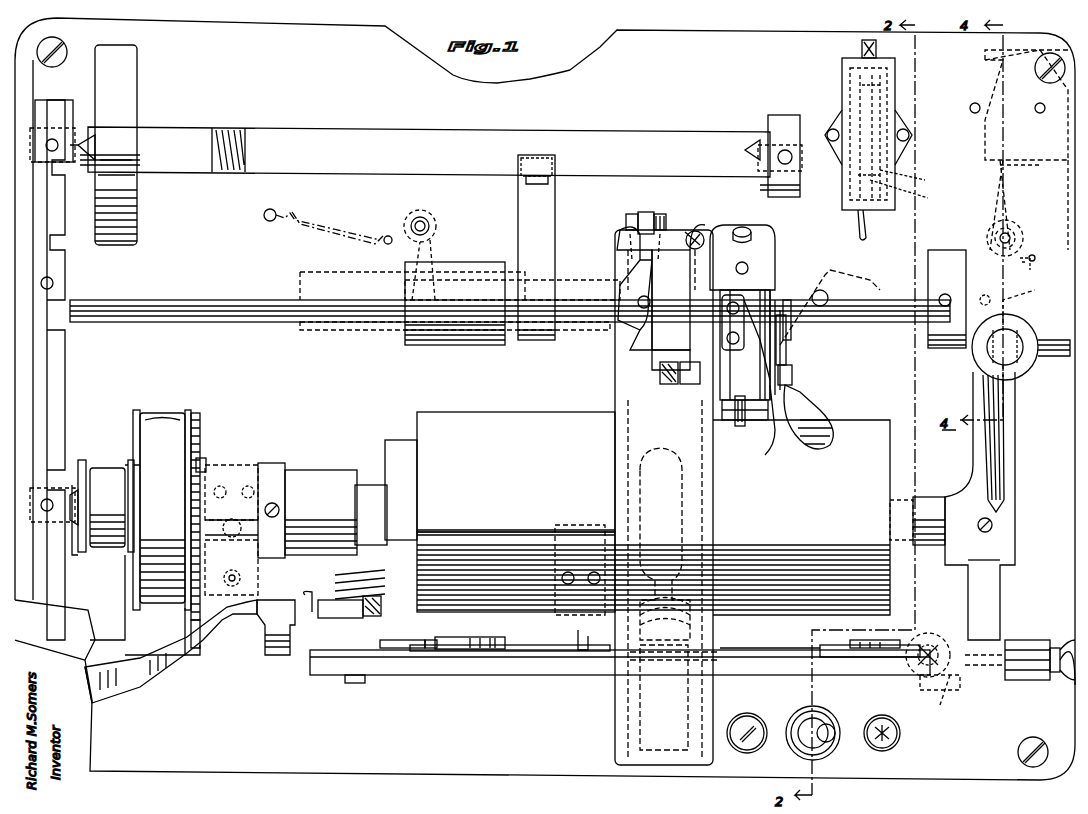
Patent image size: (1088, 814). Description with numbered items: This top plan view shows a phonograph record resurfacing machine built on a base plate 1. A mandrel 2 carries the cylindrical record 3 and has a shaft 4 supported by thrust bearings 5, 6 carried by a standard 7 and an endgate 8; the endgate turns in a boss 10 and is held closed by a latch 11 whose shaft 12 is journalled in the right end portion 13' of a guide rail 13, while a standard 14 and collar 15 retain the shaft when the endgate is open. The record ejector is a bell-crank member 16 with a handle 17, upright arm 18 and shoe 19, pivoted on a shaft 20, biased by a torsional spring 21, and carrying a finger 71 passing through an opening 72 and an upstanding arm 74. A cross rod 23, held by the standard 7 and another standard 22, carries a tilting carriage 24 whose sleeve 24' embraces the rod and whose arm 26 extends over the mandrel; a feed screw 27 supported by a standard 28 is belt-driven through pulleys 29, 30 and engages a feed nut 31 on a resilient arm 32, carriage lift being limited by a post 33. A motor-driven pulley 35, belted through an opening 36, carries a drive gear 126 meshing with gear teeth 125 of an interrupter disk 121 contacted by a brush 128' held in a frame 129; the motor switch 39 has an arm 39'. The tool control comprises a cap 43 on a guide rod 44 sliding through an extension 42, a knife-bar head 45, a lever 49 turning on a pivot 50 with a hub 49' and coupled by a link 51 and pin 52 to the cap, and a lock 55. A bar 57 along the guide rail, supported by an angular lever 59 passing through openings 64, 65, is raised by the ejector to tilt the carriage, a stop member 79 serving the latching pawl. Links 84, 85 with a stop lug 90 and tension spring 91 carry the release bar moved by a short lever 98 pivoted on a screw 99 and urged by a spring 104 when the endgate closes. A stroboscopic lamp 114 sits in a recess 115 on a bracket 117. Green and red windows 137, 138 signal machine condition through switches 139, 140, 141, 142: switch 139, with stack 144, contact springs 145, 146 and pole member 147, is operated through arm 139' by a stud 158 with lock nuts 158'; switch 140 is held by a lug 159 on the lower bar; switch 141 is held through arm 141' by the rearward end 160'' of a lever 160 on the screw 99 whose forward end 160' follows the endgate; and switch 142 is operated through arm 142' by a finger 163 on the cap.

The frame 1 is at (352, 768).
The mandrel 2 is at (400, 450).
The cylindrical record 3 is at (455, 425).
The shaft 4 is at (368, 490).
The thrust bearing 5 is at (75, 490).
The thrust bearing 6 is at (924, 512).
The standard 7 is at (50, 380).
The endgate 8 is at (970, 495).
The boss 10 is at (1025, 322).
The endgate bolt or latch 11 is at (1025, 680).
The shaft 12 is at (936, 640).
The guide rail 13 is at (620, 675).
The right end portion of guide rail 13' is at (955, 684).
The standard 14 is at (320, 480).
The collar 15 is at (276, 468).
The member 16 is at (252, 620).
The handle 17 is at (122, 690).
The upright arm 18 is at (335, 600).
The shoe 19 is at (382, 606).
The shaft 20 is at (357, 683).
The torsional spring 21 is at (335, 575).
The standard 22 is at (950, 258).
The cross rod 23 is at (150, 270).
The carriage 24 is at (593, 382).
The long sleeve 24' is at (512, 289).
The arm 26 is at (618, 716).
The feed screw 27 is at (608, 140).
The standard 28 is at (778, 128).
The pulley 29 is at (132, 72).
The pulley 30 is at (103, 470).
The feed nut 31 is at (532, 186).
The resilient arm 32 is at (524, 228).
The post 33 is at (636, 232).
The pulley 35 is at (165, 415).
The opening 36 is at (125, 632).
The switch 39 is at (821, 740).
The arm 39' is at (840, 716).
The extension 42 is at (692, 386).
The cap 43 is at (775, 232).
The guide rod 44 is at (735, 420).
The head 45 is at (742, 226).
The lever 49 is at (811, 417).
The hub 49' is at (813, 342).
The pivot 50 is at (795, 338).
The link 51 is at (809, 297).
The pin 52 is at (795, 380).
The lock 55 is at (772, 445).
The bar 57 is at (555, 650).
The angular lever 59 is at (778, 652).
The opening 64 is at (495, 640).
The opening 65 is at (875, 636).
The finger 71 is at (405, 634).
The opening 72 is at (424, 634).
The upstanding arm 74 is at (278, 658).
The stop member 79 is at (940, 701).
The link 84 is at (400, 234).
The link 85 is at (805, 299).
The stop lug 90 is at (862, 288).
The tension spring 91 is at (332, 228).
The short lever 98 is at (982, 292).
The screw 99 is at (1018, 232).
The tension spring 104 is at (1038, 260).
The stroboscopic lamp 114 is at (700, 500).
The recess 115 is at (690, 466).
The bracket 117 is at (715, 636).
The disk 121 is at (200, 655).
The gear teeth 125 is at (191, 627).
The drive gear 126 is at (208, 408).
The electrical brush 128' is at (228, 436).
The frame 129 is at (236, 462).
The green colored window 137 is at (898, 720).
The red colored window 138 is at (752, 718).
The switch 139 is at (853, 125).
The operating arm 139' is at (842, 229).
The switch 140 is at (578, 525).
The switch 141 is at (1019, 150).
The operating arm 141' is at (1034, 165).
The switch 142 is at (632, 292).
The operating arm 142' is at (636, 392).
The stack 144 is at (858, 88).
The right pair of contact springs 145 is at (915, 181).
The left pair of contact springs 146 is at (858, 175).
The pole member 147 is at (912, 194).
The stud 158 is at (672, 210).
The lock nuts 158' is at (639, 206).
The lug 159 is at (575, 640).
The lever 160 is at (1029, 308).
The forward end of lever 160' is at (1035, 380).
The rearward end portion of lever 160'' is at (984, 205).
The finger 163 is at (668, 386).